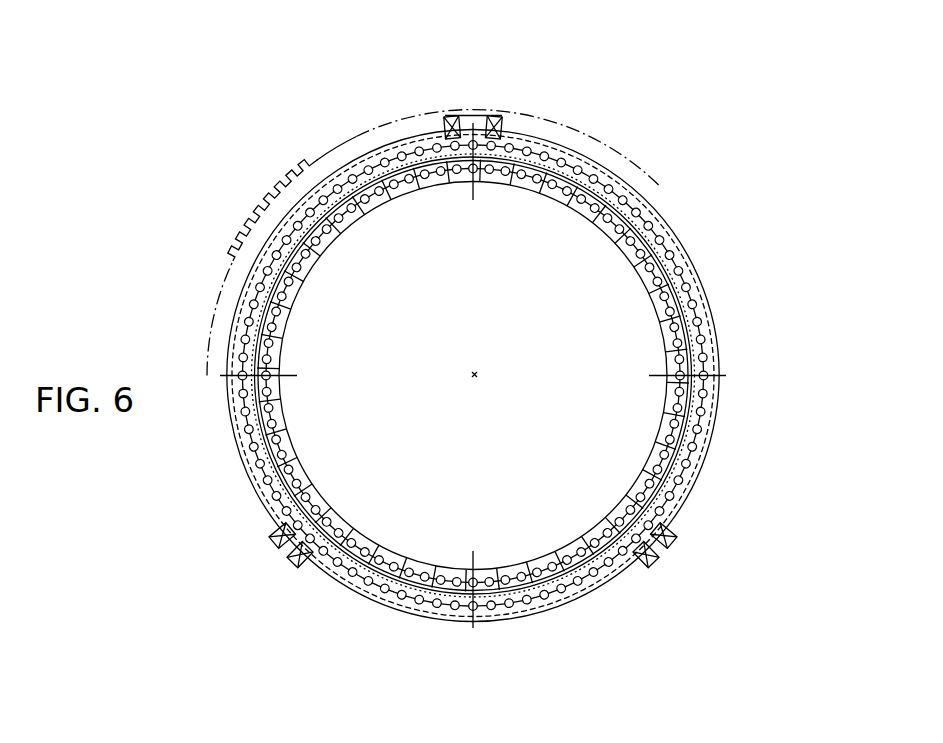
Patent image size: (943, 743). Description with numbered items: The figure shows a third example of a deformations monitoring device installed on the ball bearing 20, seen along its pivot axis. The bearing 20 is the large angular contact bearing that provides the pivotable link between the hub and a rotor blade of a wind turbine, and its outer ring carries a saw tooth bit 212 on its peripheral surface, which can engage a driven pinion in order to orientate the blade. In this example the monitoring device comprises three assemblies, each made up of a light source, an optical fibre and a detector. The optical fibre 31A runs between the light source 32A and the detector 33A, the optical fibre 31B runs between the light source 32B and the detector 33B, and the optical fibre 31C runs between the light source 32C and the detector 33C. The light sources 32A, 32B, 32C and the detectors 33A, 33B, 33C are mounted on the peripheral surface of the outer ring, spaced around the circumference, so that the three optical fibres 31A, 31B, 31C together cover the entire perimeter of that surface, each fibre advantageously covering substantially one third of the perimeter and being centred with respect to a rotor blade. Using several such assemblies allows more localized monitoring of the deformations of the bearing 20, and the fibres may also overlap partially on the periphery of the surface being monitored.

The ball bearing 20 is at (722, 183).
The saw tooth bit 212 is at (257, 203).
The optical fibre 31A is at (387, 145).
The optical fibre 31B is at (499, 620).
The optical fibre 31C is at (692, 256).
The light source 32A is at (452, 114).
The light source 32B is at (295, 560).
The light source 32C is at (678, 542).
The detector 33A is at (272, 542).
The detector 33B is at (662, 562).
The detector 33C is at (495, 114).